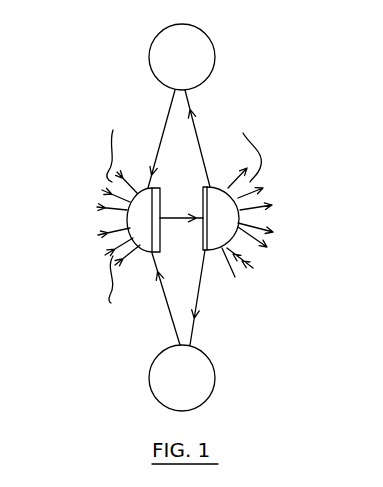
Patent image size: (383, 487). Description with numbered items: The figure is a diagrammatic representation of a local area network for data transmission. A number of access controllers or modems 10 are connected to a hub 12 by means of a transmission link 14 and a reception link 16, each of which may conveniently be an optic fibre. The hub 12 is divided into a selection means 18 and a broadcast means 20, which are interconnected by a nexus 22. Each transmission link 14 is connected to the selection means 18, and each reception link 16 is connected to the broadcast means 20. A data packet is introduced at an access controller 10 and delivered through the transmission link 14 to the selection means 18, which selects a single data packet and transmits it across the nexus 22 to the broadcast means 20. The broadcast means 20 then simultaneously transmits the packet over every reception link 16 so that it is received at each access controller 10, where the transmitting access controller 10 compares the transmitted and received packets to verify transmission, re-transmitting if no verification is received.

The access controller 10 is at (222, 60).
The hub 12 is at (248, 273).
The transmission link 14 is at (160, 134).
The reception link 16 is at (210, 150).
The selection means 18 is at (146, 221).
The broadcast means 20 is at (224, 222).
The nexus 22 is at (181, 226).